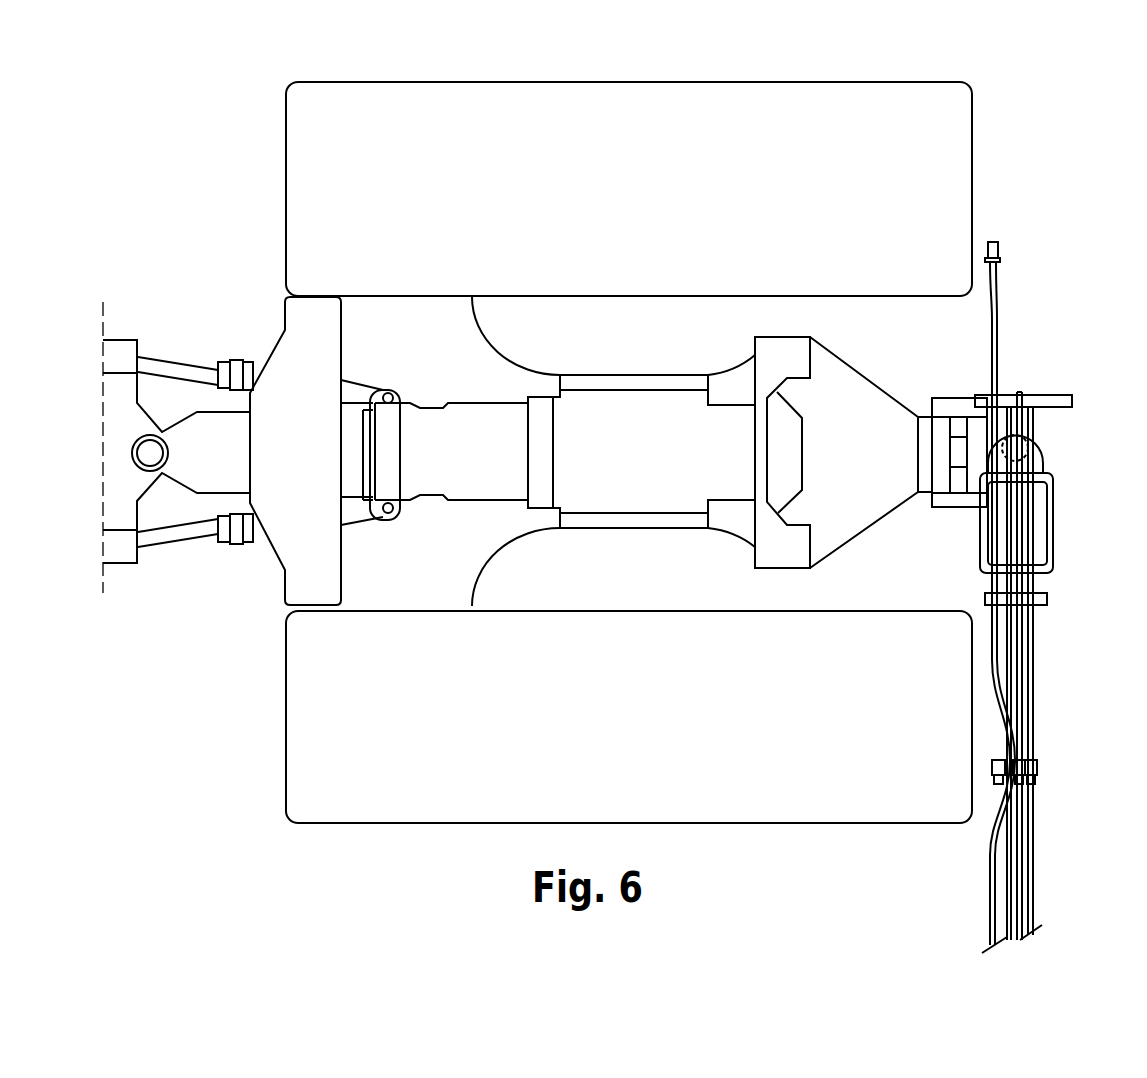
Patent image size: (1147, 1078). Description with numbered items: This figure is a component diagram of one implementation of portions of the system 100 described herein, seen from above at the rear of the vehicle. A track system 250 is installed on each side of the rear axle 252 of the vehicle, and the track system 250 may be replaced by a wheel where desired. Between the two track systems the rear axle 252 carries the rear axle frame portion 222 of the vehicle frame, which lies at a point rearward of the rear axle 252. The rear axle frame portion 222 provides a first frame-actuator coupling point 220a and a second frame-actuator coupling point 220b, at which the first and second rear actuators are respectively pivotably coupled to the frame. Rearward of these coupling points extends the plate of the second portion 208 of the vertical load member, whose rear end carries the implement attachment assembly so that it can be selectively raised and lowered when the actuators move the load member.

The axle assembly 100 is at (1042, 83).
The track system 250 is at (281, 170).
The rear axle 252 is at (632, 427).
The first frame-actuator coupling point 220a is at (773, 567).
The second frame-actuator coupling point 220b is at (780, 337).
The rear axle frame portion 222 is at (763, 397).
The second portion of the vertical load member 208 is at (842, 403).